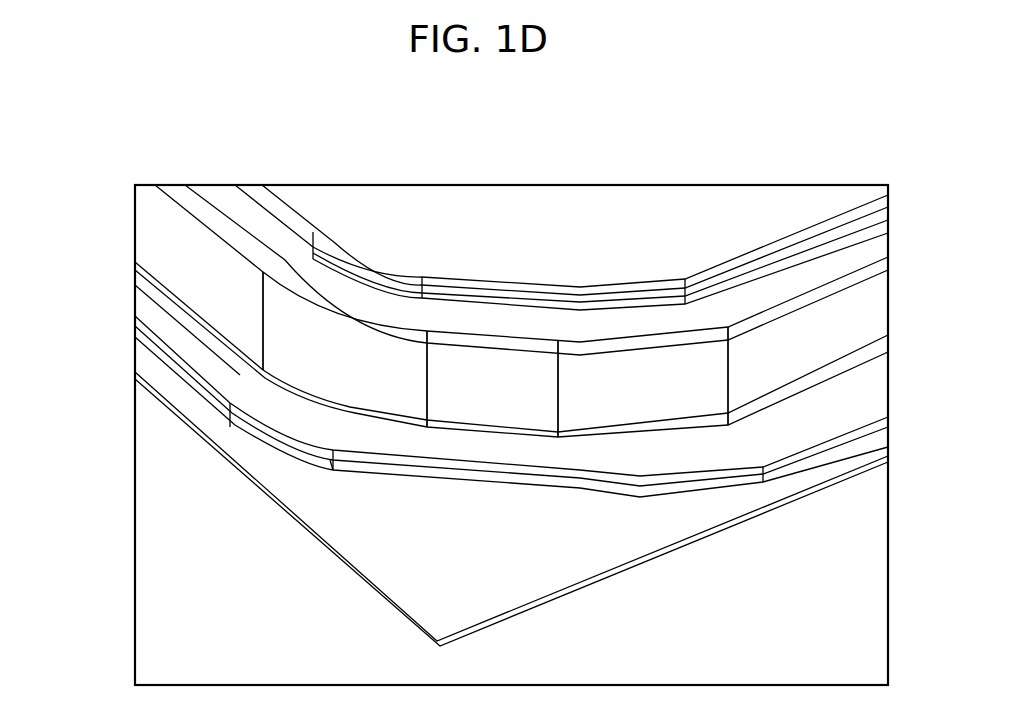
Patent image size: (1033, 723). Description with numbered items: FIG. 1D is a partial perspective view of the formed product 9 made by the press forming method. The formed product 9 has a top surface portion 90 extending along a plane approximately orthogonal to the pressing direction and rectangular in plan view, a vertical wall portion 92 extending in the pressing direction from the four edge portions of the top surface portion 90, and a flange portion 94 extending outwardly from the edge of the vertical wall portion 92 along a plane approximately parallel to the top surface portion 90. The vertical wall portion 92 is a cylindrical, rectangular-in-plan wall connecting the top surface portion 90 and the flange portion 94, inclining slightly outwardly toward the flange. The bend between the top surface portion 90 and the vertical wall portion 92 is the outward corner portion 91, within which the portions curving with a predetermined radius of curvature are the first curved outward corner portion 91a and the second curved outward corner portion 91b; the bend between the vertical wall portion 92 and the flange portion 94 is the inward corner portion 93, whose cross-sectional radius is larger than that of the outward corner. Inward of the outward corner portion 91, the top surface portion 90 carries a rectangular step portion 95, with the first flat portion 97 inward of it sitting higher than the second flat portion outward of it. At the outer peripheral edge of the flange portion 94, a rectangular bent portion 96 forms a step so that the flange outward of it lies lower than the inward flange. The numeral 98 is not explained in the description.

The formed product 9 is at (141, 124).
The top surface portion 90 is at (667, 170).
The outward corner portion 91 is at (193, 223).
The first curved outward corner portion 91a is at (645, 345).
The second curved outward corner portion 91b is at (333, 312).
The vertical wall portion 92 is at (193, 257).
The inward corner portion 93 is at (193, 303).
The flange portion 94 is at (265, 519).
The step portion 95 is at (284, 200).
The bent portion 96 is at (215, 402).
The first flat portion 97 is at (462, 200).
The eighth layer 98 is at (230, 200).